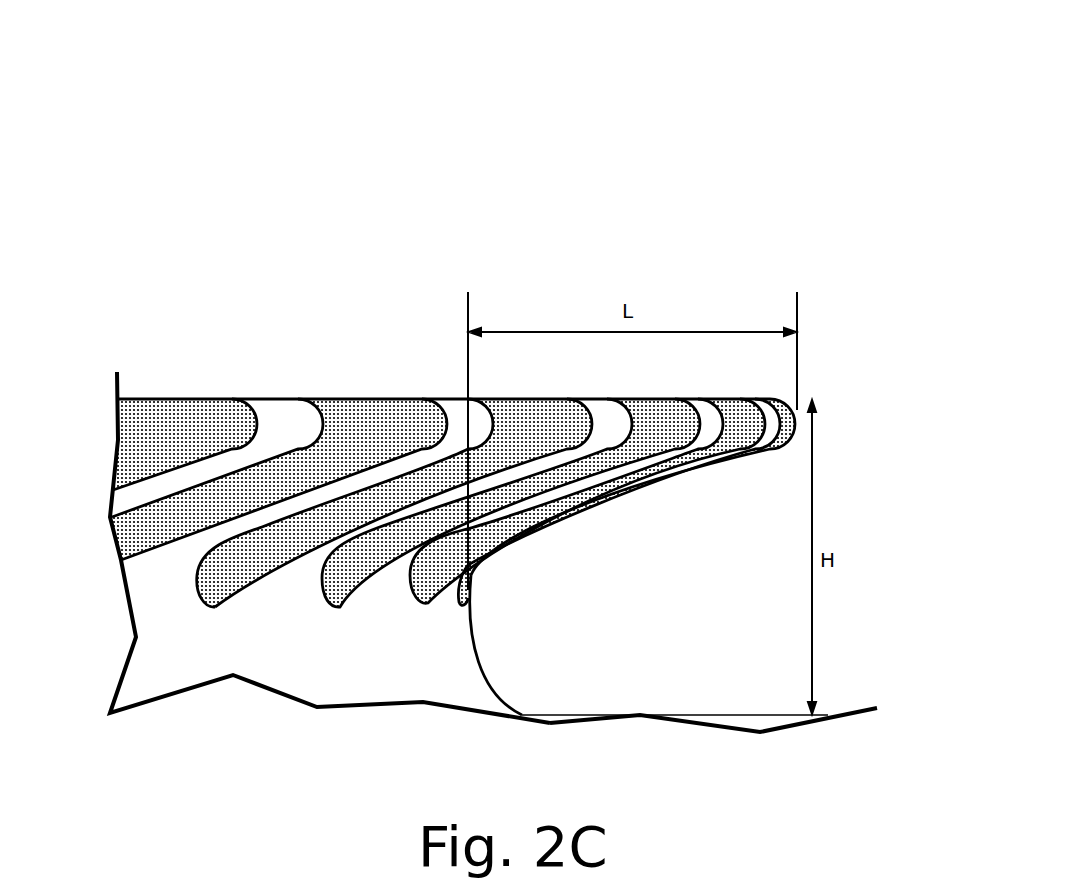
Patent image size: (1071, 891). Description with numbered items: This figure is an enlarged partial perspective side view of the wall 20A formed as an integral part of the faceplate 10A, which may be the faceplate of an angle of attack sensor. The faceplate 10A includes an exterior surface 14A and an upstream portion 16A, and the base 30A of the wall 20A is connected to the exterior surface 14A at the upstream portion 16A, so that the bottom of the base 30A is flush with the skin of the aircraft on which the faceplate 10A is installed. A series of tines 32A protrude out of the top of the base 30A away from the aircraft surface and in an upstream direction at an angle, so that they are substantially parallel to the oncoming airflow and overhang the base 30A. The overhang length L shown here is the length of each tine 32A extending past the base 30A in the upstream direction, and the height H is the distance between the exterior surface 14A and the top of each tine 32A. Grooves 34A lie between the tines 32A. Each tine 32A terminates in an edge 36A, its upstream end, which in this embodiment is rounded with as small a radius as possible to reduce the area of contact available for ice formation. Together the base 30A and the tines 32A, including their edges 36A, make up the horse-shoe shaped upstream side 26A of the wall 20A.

The faceplate 10A is at (158, 132).
The wall 20A is at (472, 425).
The tines 32A is at (462, 417).
The grooves 34A is at (233, 548).
The edges 36A is at (773, 420).
The upstream side 26A is at (472, 643).
The exterior surface 14A is at (690, 713).
The upstream portion 16A is at (737, 715).
The base 30A is at (187, 665).